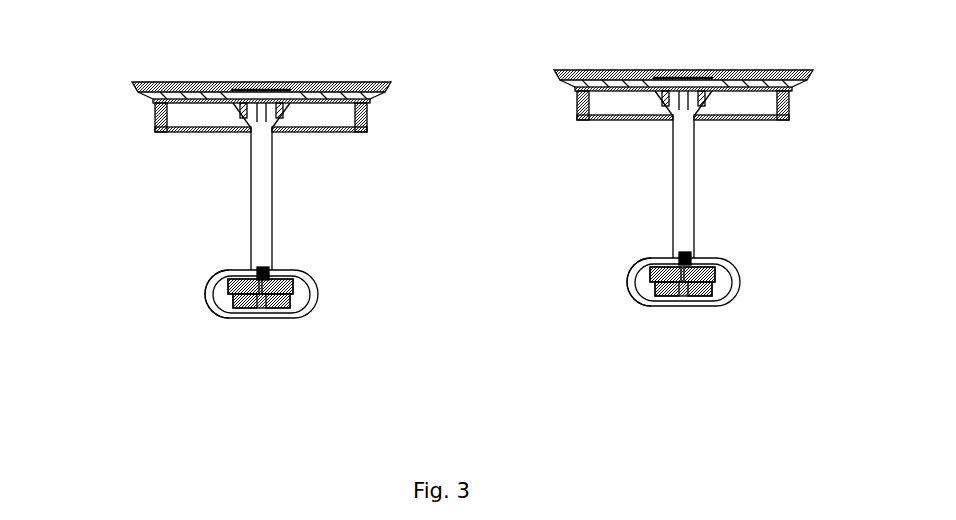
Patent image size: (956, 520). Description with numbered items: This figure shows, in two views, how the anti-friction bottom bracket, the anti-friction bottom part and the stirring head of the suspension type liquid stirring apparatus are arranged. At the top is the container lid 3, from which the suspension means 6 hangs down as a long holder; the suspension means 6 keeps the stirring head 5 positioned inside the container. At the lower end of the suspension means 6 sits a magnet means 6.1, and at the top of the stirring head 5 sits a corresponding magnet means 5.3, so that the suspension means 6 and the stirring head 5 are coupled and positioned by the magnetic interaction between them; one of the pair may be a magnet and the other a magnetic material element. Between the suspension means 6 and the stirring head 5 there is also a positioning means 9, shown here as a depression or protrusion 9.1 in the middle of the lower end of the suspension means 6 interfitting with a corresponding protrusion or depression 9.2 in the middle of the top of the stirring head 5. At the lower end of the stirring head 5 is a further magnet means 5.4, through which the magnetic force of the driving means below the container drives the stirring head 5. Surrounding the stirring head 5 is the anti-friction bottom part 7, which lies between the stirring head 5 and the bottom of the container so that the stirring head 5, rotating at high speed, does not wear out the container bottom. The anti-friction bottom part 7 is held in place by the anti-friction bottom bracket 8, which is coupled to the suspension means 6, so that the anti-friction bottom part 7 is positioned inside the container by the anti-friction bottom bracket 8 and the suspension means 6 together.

The container lid 3 is at (180, 82).
The stirring head 5 is at (217, 300).
The magnet means 5.3 is at (262, 304).
The magnet means 5.4 is at (230, 304).
The suspension means 6 is at (245, 195).
The magnet means 6.1 is at (265, 268).
The anti-friction bottom part 7 is at (293, 320).
The anti-friction bottom bracket 8 is at (203, 295).
The positioning means 9 is at (295, 295).
The protrusion 9.1 is at (273, 280).
The protrusion/depression 9.2 is at (257, 290).